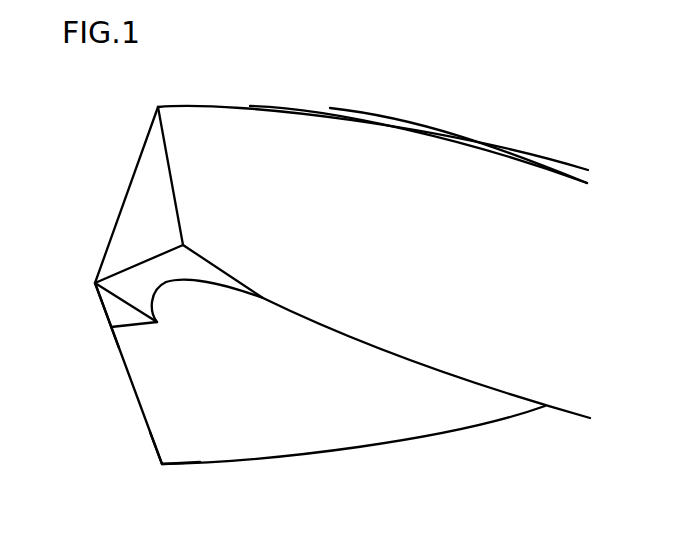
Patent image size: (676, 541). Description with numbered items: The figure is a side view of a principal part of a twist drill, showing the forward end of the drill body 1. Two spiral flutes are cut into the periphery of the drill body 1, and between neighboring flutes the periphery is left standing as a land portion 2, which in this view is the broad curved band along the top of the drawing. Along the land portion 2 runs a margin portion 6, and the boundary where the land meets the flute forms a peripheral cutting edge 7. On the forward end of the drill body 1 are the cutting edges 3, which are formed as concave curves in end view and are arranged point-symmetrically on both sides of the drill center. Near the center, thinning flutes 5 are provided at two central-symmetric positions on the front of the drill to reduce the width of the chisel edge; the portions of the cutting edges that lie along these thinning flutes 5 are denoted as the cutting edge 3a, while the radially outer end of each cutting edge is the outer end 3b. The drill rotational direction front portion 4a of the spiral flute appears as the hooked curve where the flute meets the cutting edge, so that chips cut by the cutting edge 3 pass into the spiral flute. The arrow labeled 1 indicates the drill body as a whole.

The drill body 1 is at (582, 292).
The land portion 2 is at (224, 125).
The cutting edge 3 is at (135, 397).
The cutting edge of portion along thinning flute 3a is at (103, 312).
The outer end of cutting edge 3b is at (162, 468).
The drill rotational direction front portion 4a is at (168, 285).
The thinning flute 5 is at (134, 281).
The margin portion 6 is at (448, 137).
The peripheral cutting edge 7 is at (497, 143).